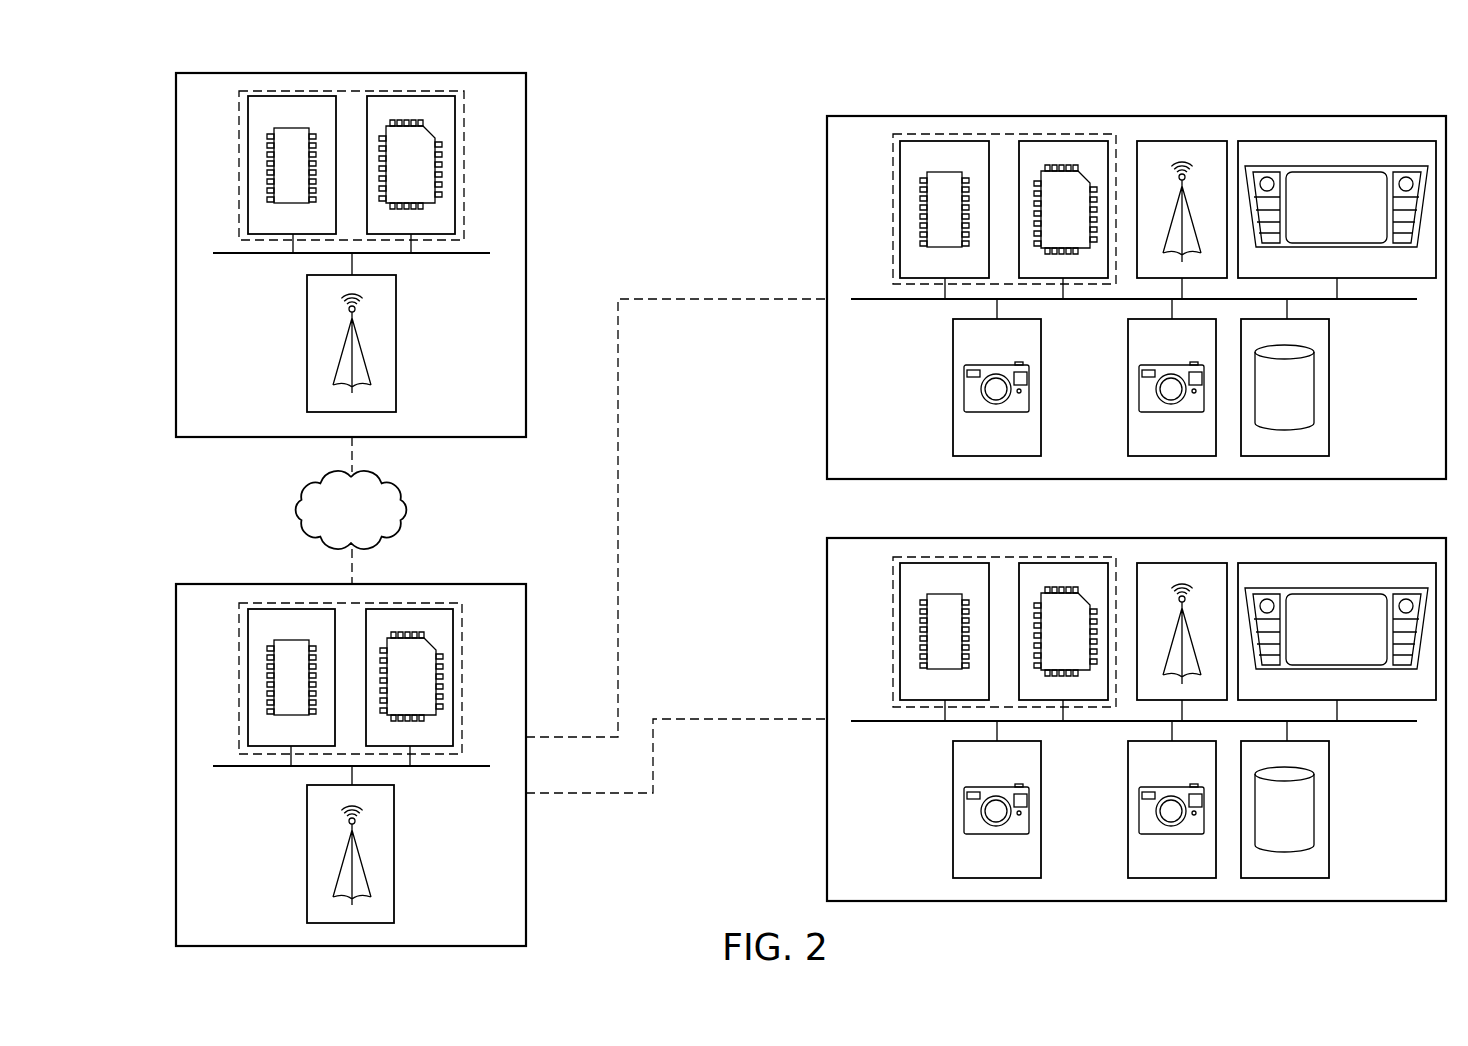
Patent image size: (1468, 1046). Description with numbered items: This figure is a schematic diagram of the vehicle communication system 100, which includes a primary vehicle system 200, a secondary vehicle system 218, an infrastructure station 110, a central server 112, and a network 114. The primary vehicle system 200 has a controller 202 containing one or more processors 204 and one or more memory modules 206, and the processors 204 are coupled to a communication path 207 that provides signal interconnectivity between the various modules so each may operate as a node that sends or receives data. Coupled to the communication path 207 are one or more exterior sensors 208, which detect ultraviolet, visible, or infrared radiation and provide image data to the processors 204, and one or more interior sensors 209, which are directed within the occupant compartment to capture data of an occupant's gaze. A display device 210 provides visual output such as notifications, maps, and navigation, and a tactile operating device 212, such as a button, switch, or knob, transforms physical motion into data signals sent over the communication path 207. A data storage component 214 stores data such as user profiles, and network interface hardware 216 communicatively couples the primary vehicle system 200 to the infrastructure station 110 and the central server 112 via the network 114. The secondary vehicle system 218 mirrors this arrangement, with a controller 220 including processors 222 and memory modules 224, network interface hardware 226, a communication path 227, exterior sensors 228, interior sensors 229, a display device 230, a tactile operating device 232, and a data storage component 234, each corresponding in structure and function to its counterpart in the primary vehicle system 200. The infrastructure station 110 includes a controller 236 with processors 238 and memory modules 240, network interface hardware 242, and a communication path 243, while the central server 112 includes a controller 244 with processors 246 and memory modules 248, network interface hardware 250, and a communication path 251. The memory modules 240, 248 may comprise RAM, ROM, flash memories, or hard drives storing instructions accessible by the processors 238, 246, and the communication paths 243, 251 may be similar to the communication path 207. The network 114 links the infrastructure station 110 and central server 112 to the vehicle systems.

The vehicle communication system 100 is at (143, 50).
The infrastructure station 110 is at (542, 600).
The central server 112 is at (570, 160).
The network 114 is at (293, 507).
The primary vehicle system 200 is at (808, 160).
The controller 202 is at (1003, 134).
The processors 204 is at (945, 141).
The memory modules 206 is at (1063, 141).
The communication path 207 is at (1405, 300).
The exterior sensors 208 is at (953, 388).
The interior sensors 209 is at (1128, 388).
The display device 210 is at (1337, 141).
The tactile operating device 212 is at (1427, 136).
The data storage component 214 is at (1329, 388).
The network interface hardware 216 is at (1182, 141).
The secondary vehicle system 218 is at (812, 587).
The controller 220 is at (1004, 602).
The processors 222 is at (944, 601).
The memory modules 224 is at (1063, 602).
The network interface hardware 226 is at (1182, 602).
The communication path 227 is at (1136, 739).
The exterior sensors 228 is at (958, 809).
The interior sensors 229 is at (1133, 809).
The display device 230 is at (1346, 601).
The tactile operating device 232 is at (1427, 558).
The data storage component 234 is at (1323, 809).
The controller 236 is at (263, 603).
The processors 238 is at (292, 609).
The memory modules 240 is at (410, 609).
The network interface hardware 242 is at (394, 852).
The communication path 243 is at (427, 770).
The controller 244 is at (239, 178).
The processors 246 is at (268, 236).
The memory modules 248 is at (438, 236).
The network interface hardware 250 is at (307, 343).
The communication path 251 is at (481, 252).